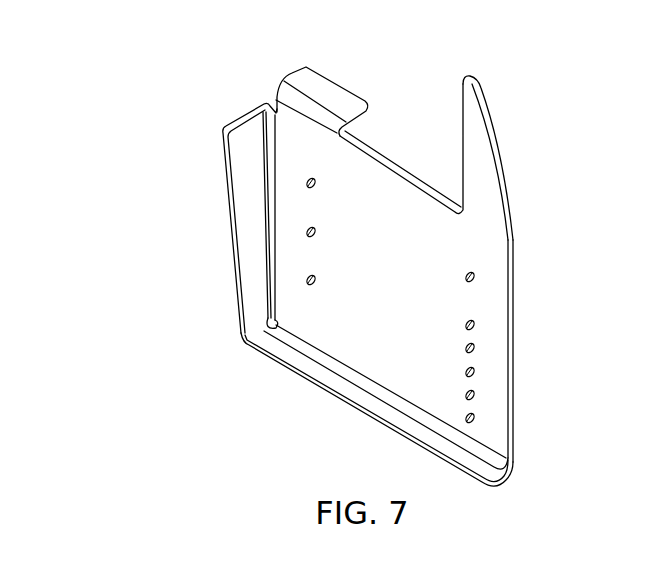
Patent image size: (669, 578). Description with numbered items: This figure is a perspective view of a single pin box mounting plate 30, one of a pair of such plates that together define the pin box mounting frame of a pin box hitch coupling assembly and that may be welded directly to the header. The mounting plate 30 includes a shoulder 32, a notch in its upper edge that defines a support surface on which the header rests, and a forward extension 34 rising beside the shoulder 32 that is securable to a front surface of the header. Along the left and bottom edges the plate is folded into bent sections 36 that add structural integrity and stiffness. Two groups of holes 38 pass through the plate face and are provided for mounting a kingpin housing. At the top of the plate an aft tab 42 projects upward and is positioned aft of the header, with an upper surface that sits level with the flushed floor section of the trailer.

The pin box mounting plate 30 is at (146, 143).
The shoulder 32 is at (408, 182).
The forward extension 34 is at (478, 138).
The bent sections 36 is at (252, 248).
The holes 38 is at (313, 183).
The aft tab 42 is at (297, 78).